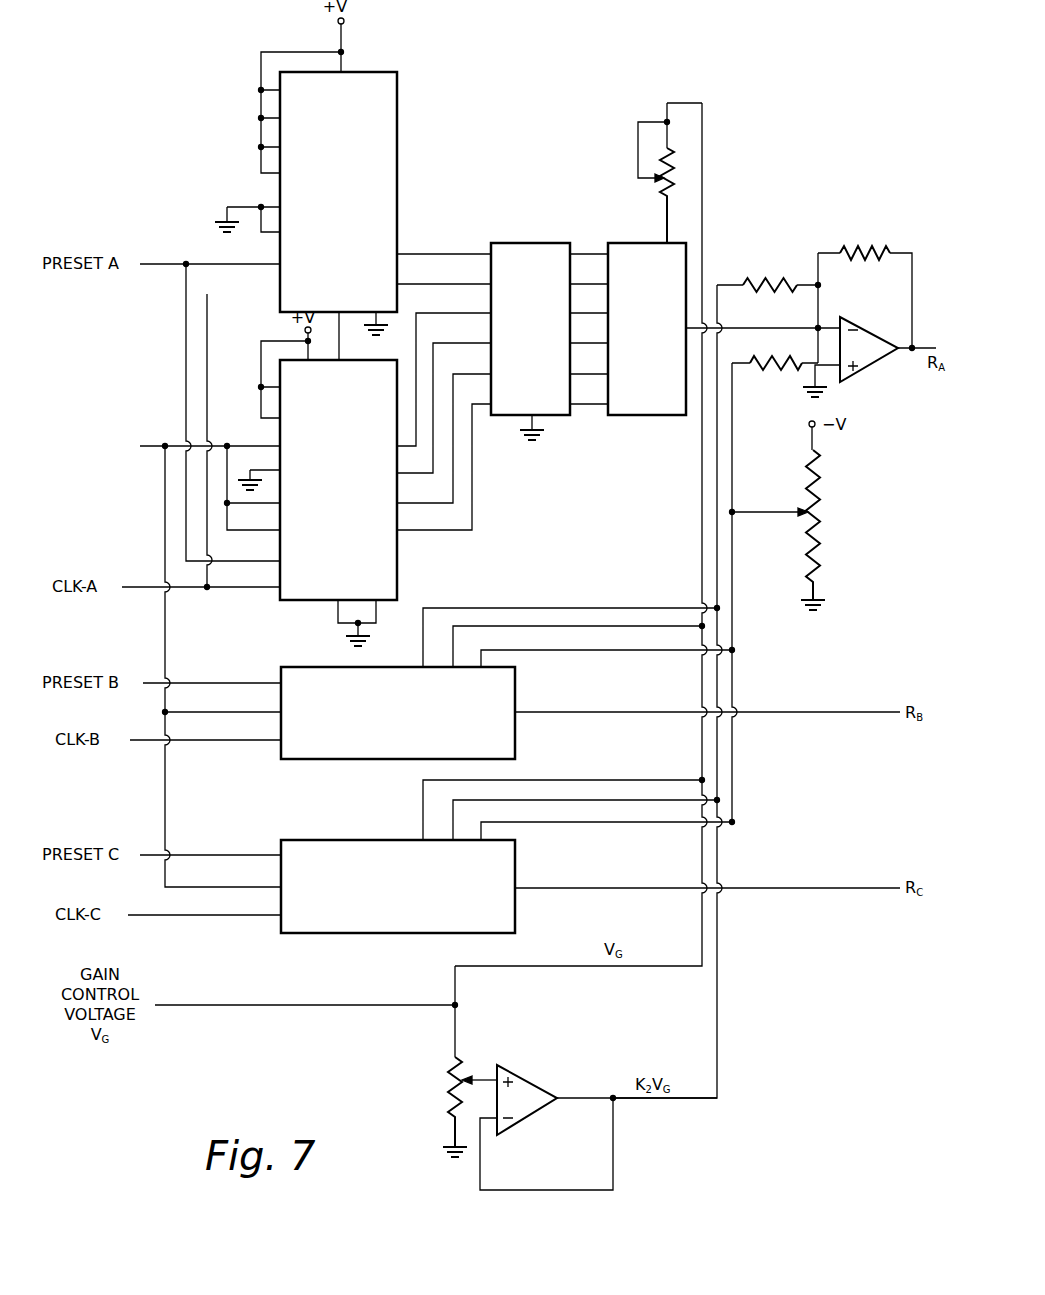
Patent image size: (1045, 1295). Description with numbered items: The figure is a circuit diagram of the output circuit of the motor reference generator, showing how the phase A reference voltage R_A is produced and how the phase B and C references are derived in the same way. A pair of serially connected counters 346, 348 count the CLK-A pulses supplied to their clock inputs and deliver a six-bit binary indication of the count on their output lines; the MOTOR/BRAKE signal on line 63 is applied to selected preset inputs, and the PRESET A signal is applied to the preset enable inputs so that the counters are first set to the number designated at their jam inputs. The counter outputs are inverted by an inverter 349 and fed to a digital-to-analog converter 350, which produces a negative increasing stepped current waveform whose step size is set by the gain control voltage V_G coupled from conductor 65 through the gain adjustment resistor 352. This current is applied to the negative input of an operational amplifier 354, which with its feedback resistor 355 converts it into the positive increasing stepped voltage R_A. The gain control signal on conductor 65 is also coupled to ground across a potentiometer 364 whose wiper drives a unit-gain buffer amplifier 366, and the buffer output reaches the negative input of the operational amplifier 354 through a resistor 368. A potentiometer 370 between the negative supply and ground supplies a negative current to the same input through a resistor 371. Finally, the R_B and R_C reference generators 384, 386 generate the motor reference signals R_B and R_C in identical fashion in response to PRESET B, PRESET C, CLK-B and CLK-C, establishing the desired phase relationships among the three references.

The motor/brake signal line 63 is at (153, 446).
The conductor 65 is at (232, 1005).
The counter 346 is at (385, 118).
The counter 348 is at (388, 555).
The inverter 349 is at (536, 255).
The digital-to-analog converter 350 is at (631, 410).
The gain adjustment resistor 352 is at (672, 170).
The operational amplifier 354 is at (870, 368).
The feedback resistor 355 is at (863, 250).
The resistor 368 is at (765, 283).
The potentiometer 370 is at (818, 567).
The resistor 371 is at (770, 367).
The R_B reference generator 384 is at (508, 683).
The R_C reference generator 386 is at (505, 858).
The potentiometer 364 is at (447, 1082).
The buffer amplifier 366 is at (527, 1093).